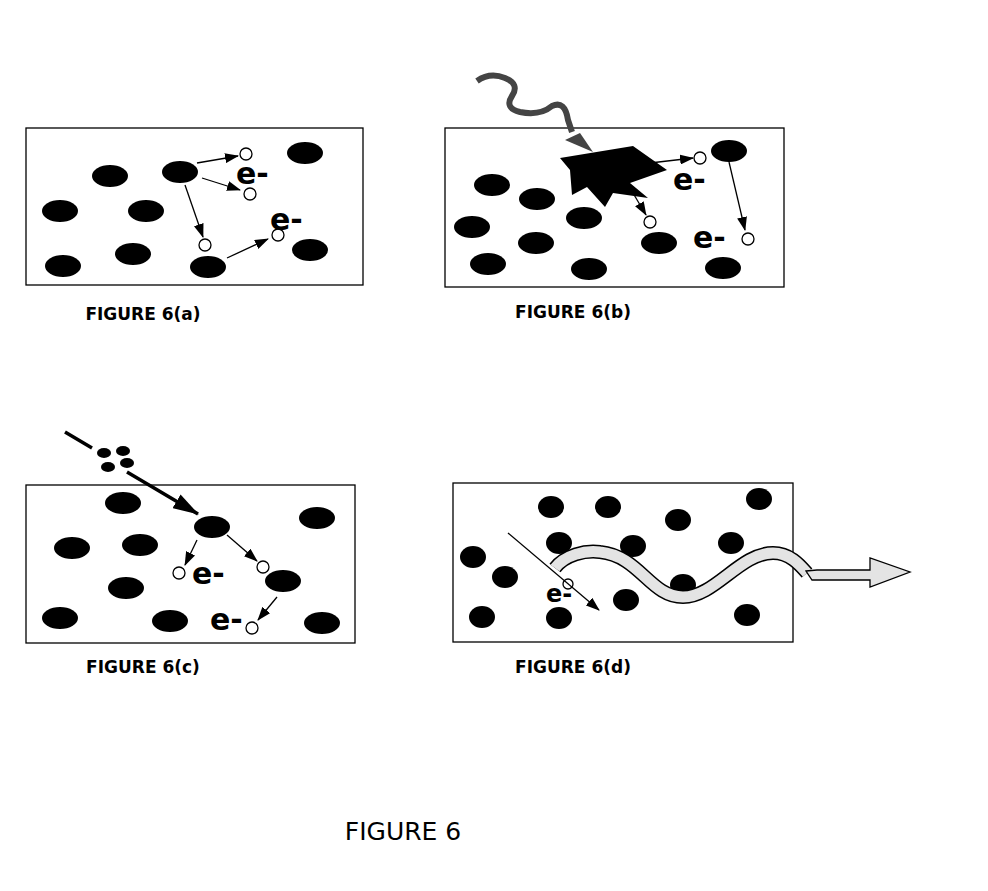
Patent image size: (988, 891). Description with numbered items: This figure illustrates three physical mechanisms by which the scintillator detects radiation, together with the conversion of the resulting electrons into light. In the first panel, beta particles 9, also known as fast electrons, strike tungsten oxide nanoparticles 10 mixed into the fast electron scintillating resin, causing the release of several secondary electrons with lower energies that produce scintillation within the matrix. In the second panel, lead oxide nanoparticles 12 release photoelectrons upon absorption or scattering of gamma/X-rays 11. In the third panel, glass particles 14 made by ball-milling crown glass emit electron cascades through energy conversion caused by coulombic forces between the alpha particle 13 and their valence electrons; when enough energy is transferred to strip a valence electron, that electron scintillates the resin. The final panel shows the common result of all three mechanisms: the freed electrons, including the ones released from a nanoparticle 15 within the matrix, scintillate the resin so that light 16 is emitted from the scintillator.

In FIG. 6A, the beta particles 9 is at (41, 81).
In FIG. 6A, the tungsten oxide nanoparticles 10 is at (297, 143).
In FIG. 6B, the gamma/X-rays 11 is at (520, 76).
In FIG. 6B, the lead oxide nanoparticles 12 is at (733, 141).
In FIG. 6C, the alpha particle 13 is at (75, 436).
In FIG. 6C, the glass particles 14 is at (313, 507).
In FIG. 6D, the heavy atom 15 is at (762, 487).
In FIG. 6D, the light 16 is at (838, 572).